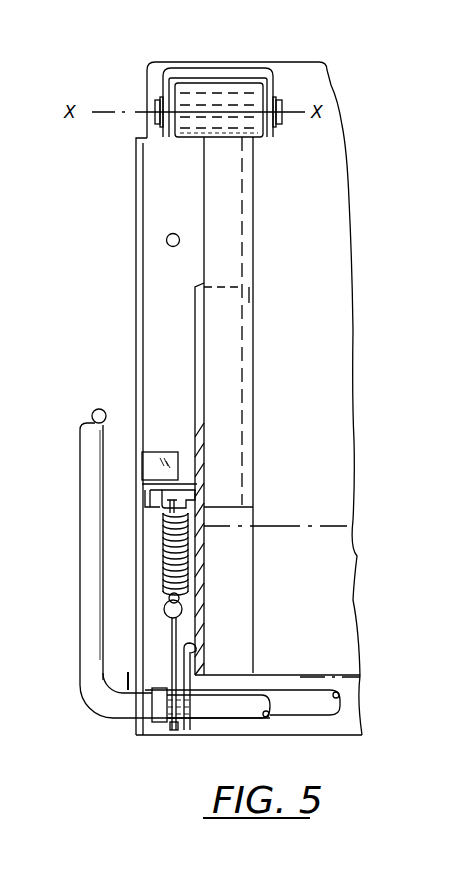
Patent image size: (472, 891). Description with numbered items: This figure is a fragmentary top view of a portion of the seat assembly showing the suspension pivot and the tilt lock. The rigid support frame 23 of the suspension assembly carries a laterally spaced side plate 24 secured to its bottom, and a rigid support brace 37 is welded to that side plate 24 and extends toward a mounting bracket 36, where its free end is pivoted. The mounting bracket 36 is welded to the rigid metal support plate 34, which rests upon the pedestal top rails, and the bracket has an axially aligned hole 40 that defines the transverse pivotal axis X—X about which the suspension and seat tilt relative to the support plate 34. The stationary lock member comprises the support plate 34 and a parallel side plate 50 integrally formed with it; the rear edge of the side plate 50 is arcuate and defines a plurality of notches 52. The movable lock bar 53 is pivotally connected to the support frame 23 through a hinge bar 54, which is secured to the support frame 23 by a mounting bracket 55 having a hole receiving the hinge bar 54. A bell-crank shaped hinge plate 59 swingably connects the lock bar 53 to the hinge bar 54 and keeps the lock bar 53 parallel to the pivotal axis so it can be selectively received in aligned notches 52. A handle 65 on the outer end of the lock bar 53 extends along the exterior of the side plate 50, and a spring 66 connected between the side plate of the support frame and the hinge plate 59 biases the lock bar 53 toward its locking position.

The support frame 23 is at (310, 690).
The side plate 24 is at (202, 598).
The support plate 34 is at (160, 231).
The mounting bracket 36 is at (190, 68).
The support brace 37 is at (240, 363).
The hole 40 is at (278, 123).
The side plate 50 is at (136, 340).
The notch 52 is at (130, 676).
The lock bar 53 is at (253, 712).
The hinge bar 54 is at (325, 702).
The mounting bracket 55 is at (188, 660).
The hinge plate 59 is at (170, 730).
The handle 65 is at (80, 512).
The spring 66 is at (162, 570).